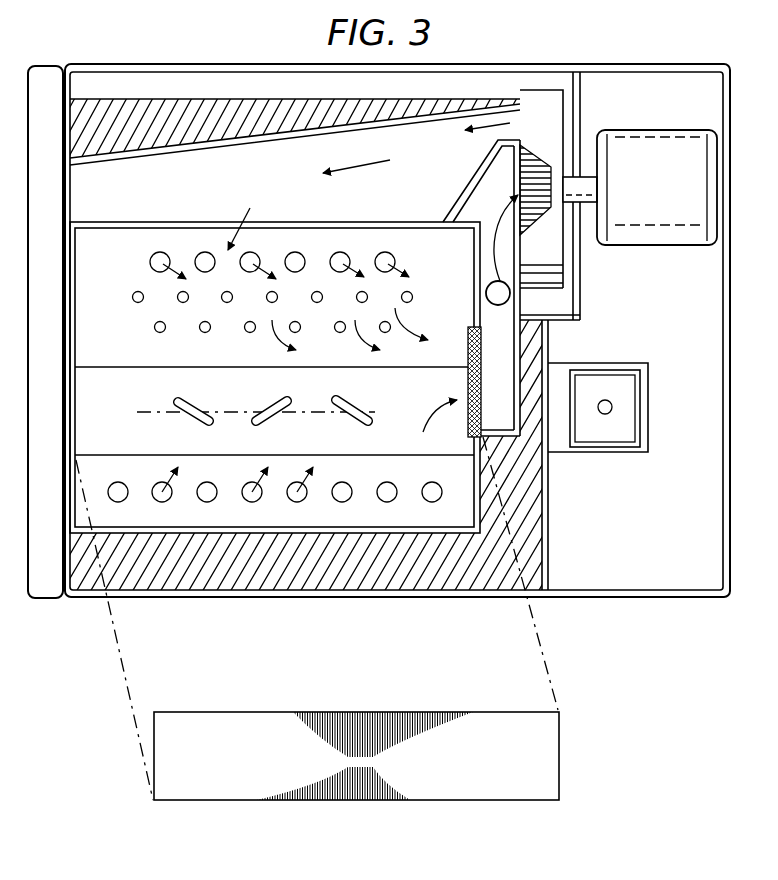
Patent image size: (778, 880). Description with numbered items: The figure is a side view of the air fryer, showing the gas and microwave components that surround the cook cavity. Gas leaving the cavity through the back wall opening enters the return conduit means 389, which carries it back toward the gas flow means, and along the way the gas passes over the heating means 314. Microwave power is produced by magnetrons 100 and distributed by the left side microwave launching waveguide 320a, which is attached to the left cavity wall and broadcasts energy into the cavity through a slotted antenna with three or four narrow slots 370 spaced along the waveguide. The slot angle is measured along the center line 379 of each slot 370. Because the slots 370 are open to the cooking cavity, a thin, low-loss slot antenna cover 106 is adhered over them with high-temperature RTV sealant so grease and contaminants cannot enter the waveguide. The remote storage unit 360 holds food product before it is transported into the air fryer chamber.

The magnetron 100 is at (627, 392).
The slot antenna cover 106 is at (193, 803).
The heating means 314 is at (487, 288).
The left side microwave launching waveguide 320a is at (557, 443).
The remote storage unit 360 is at (437, 415).
The slot 370 is at (181, 401).
The center line 379 is at (157, 412).
The return conduit means 389 is at (503, 348).